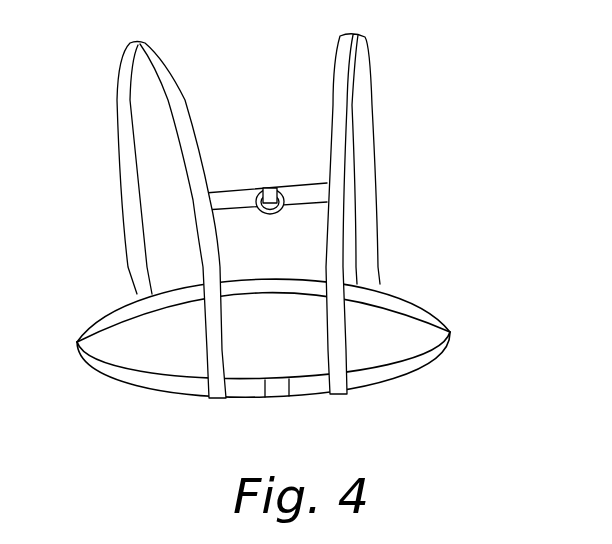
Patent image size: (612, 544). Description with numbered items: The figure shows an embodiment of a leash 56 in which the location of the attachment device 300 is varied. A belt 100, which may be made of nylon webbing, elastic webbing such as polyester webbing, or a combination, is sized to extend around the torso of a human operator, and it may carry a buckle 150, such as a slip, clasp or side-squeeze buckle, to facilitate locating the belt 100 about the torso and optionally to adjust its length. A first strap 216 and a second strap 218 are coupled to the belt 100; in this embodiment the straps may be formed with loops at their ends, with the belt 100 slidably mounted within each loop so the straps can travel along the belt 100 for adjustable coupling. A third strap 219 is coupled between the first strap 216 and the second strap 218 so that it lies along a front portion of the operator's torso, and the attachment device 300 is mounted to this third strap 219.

The leash 56 is at (407, 33).
The belt 100 is at (452, 333).
The buckle 150 is at (279, 394).
The first strap 216 is at (127, 43).
The second strap 218 is at (340, 34).
The third strap 219 is at (245, 192).
The attachment device 300 is at (274, 216).